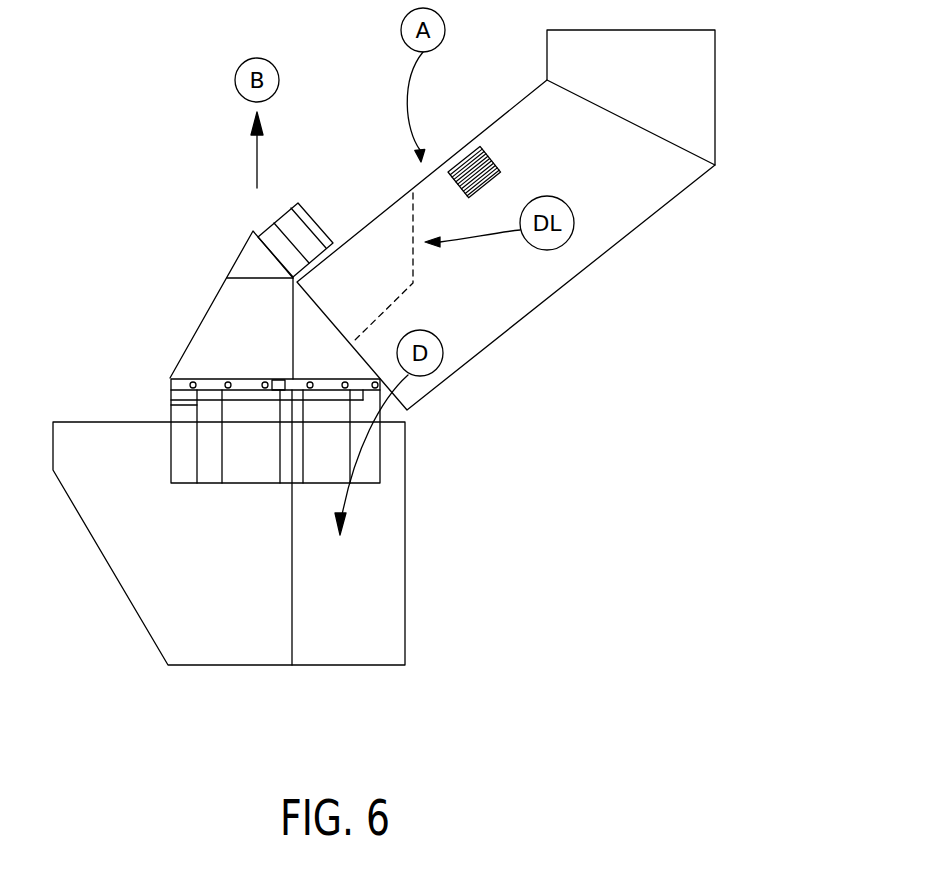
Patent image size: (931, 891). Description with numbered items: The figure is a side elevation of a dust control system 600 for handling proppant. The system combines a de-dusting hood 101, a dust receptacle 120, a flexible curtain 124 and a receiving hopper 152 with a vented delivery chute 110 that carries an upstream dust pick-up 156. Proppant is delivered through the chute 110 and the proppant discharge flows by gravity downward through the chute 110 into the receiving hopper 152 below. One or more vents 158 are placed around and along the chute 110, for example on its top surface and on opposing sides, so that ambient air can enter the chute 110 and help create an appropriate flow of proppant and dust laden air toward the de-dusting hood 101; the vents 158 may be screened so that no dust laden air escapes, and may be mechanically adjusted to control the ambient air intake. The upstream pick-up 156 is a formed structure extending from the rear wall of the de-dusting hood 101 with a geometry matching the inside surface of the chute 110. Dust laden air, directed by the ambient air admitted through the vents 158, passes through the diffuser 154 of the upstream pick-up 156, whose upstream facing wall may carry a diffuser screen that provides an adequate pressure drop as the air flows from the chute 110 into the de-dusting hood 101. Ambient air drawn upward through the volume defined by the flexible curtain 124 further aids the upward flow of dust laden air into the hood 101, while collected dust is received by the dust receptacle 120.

The dust control system 600 is at (120, 213).
The de-dusting hood 101 is at (212, 327).
The delivery chute 110 is at (547, 275).
The dust receptacle 120 is at (280, 225).
The flexible curtain 124 is at (373, 438).
The receiving hopper 152 is at (125, 570).
The diffuser 154 is at (415, 277).
The upstream dust pick-up 156 is at (367, 252).
The vents 158 is at (454, 151).